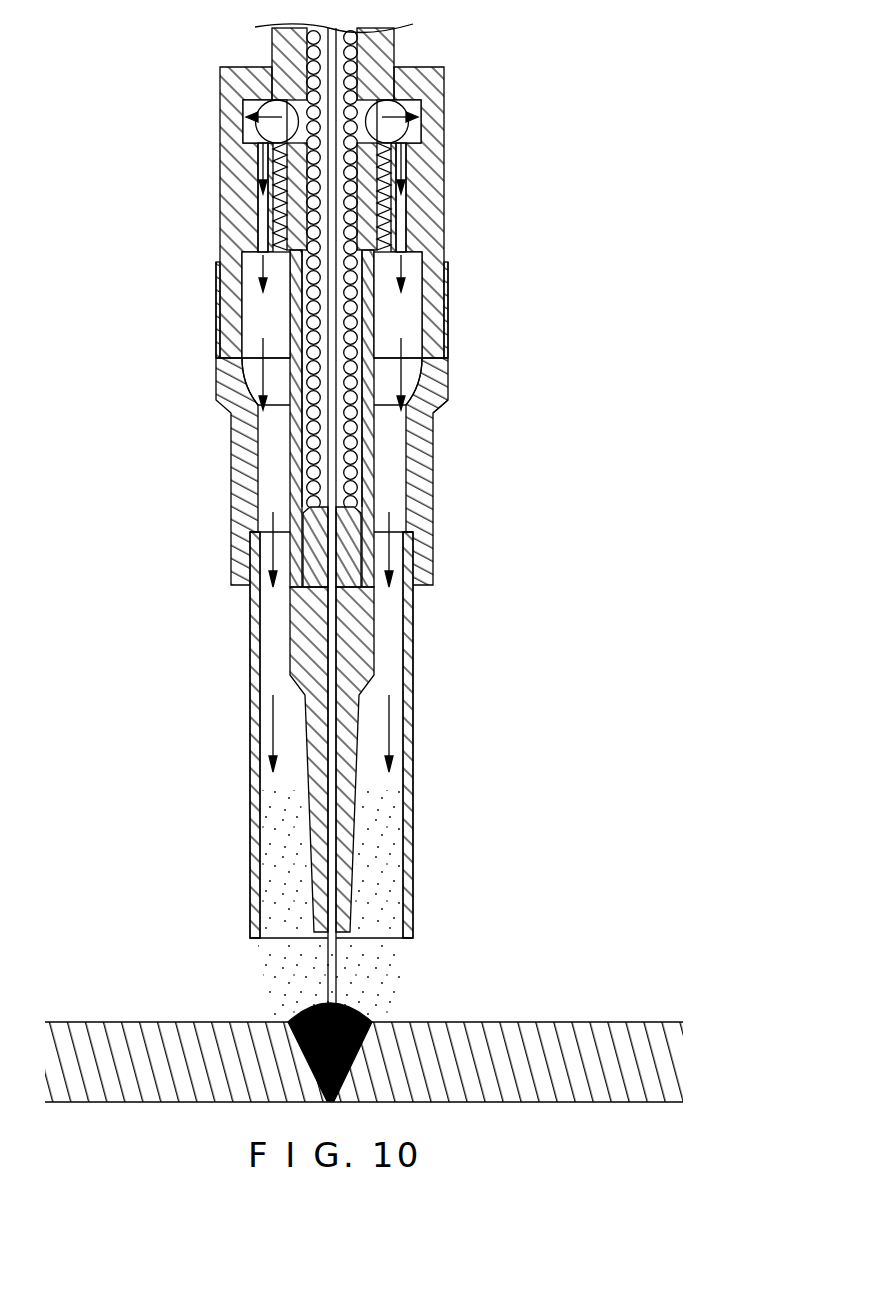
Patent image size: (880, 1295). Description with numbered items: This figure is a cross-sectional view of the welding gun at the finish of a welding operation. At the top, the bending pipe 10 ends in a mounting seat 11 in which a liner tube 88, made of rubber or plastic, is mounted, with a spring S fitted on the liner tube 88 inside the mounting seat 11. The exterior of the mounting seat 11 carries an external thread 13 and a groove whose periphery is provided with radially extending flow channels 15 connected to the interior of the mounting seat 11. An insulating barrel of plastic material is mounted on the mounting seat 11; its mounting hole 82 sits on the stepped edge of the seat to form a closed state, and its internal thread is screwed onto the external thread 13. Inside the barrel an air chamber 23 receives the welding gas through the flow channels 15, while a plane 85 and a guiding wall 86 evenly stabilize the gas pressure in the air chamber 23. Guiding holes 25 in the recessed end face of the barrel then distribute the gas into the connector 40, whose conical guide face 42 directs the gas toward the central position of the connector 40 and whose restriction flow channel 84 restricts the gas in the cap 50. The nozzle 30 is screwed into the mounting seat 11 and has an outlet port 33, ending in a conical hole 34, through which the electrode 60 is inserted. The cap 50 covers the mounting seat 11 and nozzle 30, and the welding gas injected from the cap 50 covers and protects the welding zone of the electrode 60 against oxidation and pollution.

The bending pipe 10 is at (384, 44).
The mounting seat 11 is at (293, 480).
The external thread 13 is at (380, 215).
The flow channels 15 is at (298, 108).
The air chamber 23 is at (257, 125).
The guiding holes 25 is at (263, 205).
The nozzle 30 is at (357, 652).
The outlet port 33 is at (330, 843).
The conical hole 34 is at (347, 513).
The connector 40 is at (245, 423).
The guide face 42 is at (408, 399).
The cap 50 is at (253, 732).
The electrode 60 is at (320, 974).
The mounting hole 82 is at (395, 87).
The restriction flow channel 84 is at (385, 438).
The plane 85 is at (415, 145).
The guiding wall 86 is at (422, 128).
The liner tube 88 is at (343, 72).
The spring S is at (348, 462).